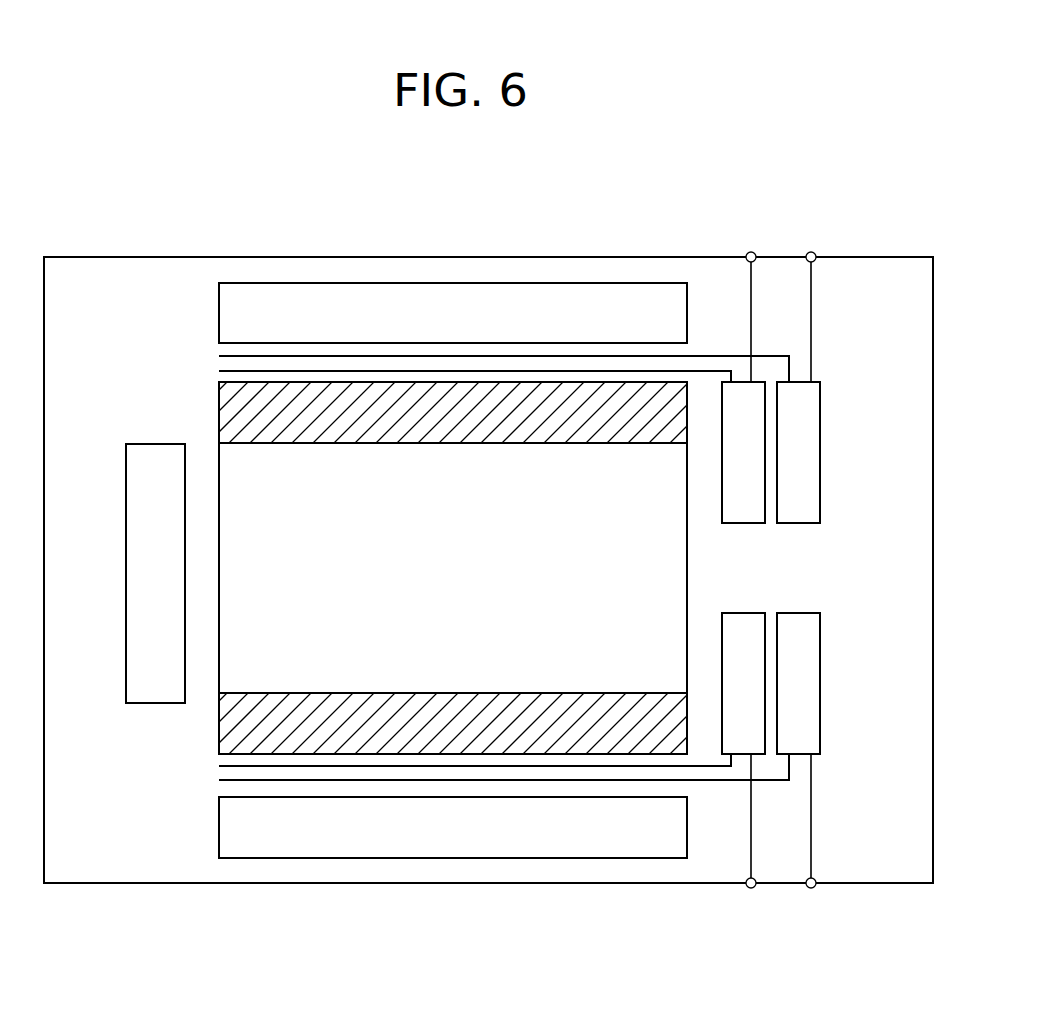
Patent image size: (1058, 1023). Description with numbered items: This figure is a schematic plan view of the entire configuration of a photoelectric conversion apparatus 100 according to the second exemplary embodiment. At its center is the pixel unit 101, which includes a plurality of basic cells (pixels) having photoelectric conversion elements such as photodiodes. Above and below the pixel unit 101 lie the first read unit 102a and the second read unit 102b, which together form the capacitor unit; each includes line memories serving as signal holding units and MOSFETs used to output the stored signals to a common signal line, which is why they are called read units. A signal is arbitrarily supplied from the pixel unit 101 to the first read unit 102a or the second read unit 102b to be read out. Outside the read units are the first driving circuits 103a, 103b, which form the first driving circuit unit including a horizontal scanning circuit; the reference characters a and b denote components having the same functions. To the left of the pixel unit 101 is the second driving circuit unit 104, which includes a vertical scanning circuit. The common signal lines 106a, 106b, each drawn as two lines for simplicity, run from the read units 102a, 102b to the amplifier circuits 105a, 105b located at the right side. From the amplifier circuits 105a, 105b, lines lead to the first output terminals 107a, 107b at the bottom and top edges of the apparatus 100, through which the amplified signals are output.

The ultrasonic motor / substrate 100 is at (584, 883).
The pixel unit 101 is at (687, 563).
The first read unit 102a is at (219, 733).
The second read unit 102b is at (219, 415).
The first driving circuit 103a is at (219, 828).
The first driving circuit 103b is at (219, 313).
The second driving circuit unit 104 is at (126, 497).
The amplifier circuit 105a is at (840, 613).
The amplifier circuit 105b is at (840, 387).
The common signal lines 106a is at (213, 755).
The common signal lines 106b is at (213, 343).
The first output terminals 107a is at (808, 888).
The first output terminals 107b is at (809, 252).